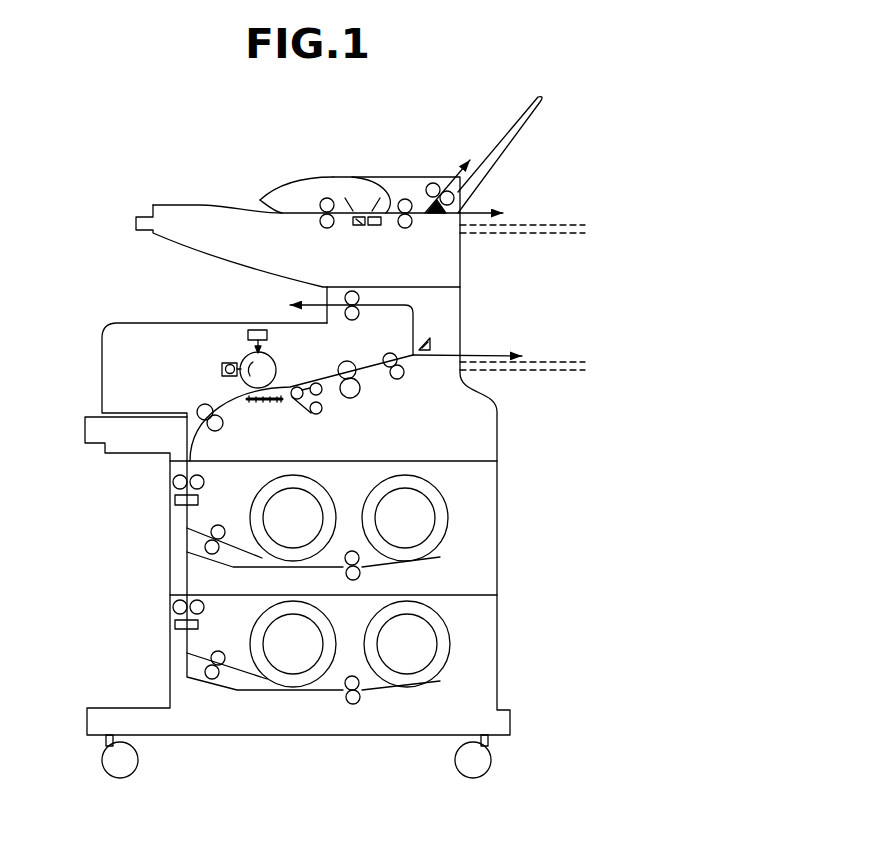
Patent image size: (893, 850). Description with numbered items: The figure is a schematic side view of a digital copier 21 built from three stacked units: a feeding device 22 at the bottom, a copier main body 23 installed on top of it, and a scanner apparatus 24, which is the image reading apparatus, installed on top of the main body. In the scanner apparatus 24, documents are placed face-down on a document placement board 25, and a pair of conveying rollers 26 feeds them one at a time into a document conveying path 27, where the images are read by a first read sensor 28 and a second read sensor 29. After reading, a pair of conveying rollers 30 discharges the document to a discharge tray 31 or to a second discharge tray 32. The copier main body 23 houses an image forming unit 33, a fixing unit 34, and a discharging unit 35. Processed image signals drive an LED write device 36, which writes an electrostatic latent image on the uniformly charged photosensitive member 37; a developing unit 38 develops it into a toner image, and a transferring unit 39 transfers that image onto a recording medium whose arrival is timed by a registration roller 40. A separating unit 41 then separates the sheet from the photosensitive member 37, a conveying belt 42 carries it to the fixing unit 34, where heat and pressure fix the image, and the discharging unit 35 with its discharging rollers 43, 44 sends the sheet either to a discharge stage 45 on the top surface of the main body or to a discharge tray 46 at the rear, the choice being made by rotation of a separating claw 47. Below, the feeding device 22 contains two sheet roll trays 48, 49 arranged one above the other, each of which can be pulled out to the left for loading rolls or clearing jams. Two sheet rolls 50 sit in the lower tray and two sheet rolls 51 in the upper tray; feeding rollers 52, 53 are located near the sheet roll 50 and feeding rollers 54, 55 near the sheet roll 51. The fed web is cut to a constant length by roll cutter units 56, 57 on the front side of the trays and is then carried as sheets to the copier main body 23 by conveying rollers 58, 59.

The digital copier 21 is at (115, 285).
The feeding device 22 is at (168, 584).
The copier main body 23 is at (96, 385).
The scanner apparatus 24 is at (146, 198).
The document placement board 25 is at (210, 207).
The pair of conveying rollers 26 is at (326, 194).
The document conveying path 27 is at (370, 195).
The first read sensor 28 is at (356, 227).
The second read sensor 29 is at (381, 227).
The pair of conveying rollers 30 is at (405, 194).
The discharge tray 31 is at (499, 127).
The discharge tray 32 is at (548, 230).
The image forming unit 33 is at (239, 338).
The fixing unit 34 is at (339, 360).
The discharging unit 35 is at (446, 322).
The LED write device 36 is at (258, 329).
The photosensitive member 37 is at (275, 372).
The developing unit 38 is at (221, 368).
The transferring unit 39 is at (216, 422).
The registration roller 40 is at (196, 404).
The separating unit 41 is at (281, 405).
The conveying belt 42 is at (325, 400).
The discharging roller 43 is at (407, 384).
The discharging roller 44 is at (365, 322).
The discharge stage 45 is at (173, 322).
The discharge tray 46 is at (563, 361).
The separating claw 47 is at (431, 344).
The sheet roll tray 48 is at (472, 655).
The sheet roll tray 49 is at (467, 544).
The sheet roll 50 is at (387, 626).
The sheet roll 51 is at (390, 490).
The feeding roller 52 is at (369, 702).
The feeding roller 53 is at (224, 681).
The feeding roller 54 is at (364, 569).
The feeding roller 55 is at (223, 524).
The roll cutter unit 56 is at (168, 495).
The roll cutter unit 57 is at (168, 622).
The conveying roller 58 is at (174, 478).
The conveying roller 59 is at (174, 600).